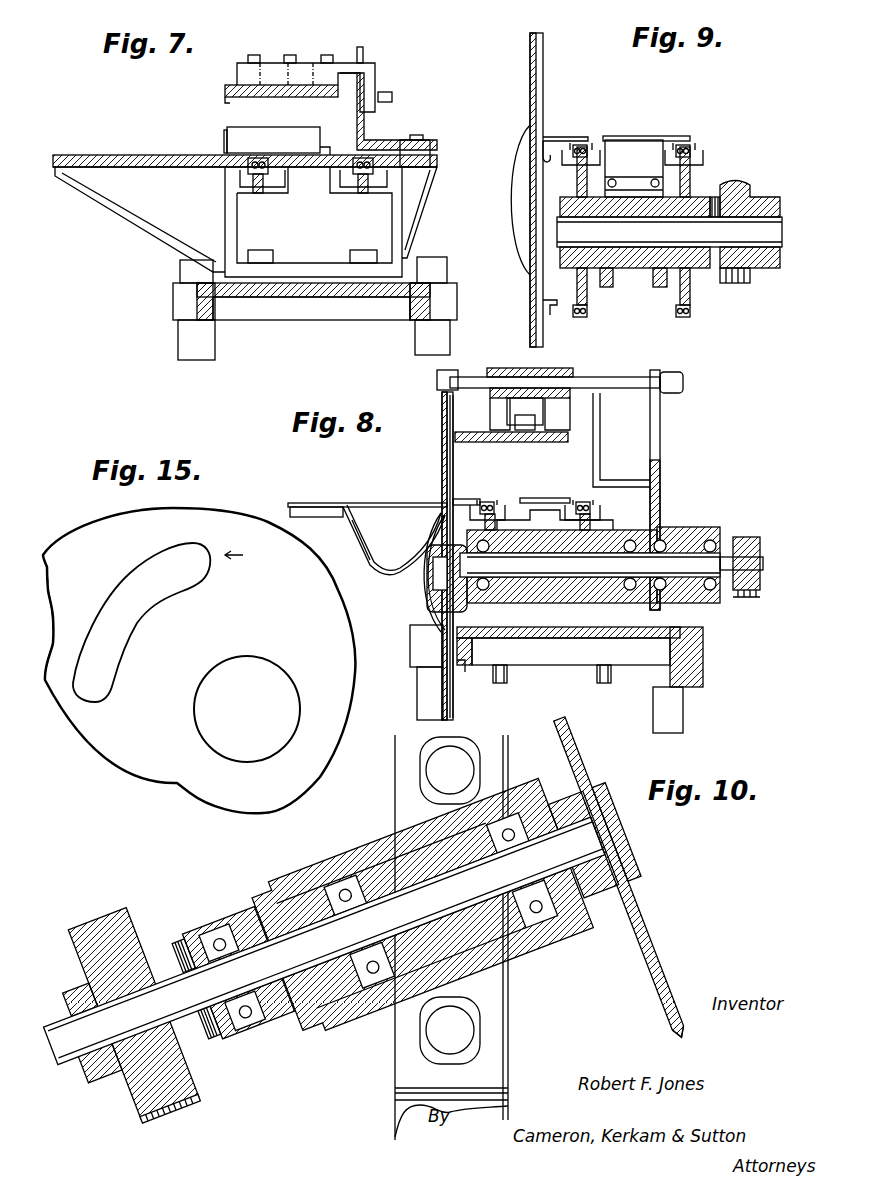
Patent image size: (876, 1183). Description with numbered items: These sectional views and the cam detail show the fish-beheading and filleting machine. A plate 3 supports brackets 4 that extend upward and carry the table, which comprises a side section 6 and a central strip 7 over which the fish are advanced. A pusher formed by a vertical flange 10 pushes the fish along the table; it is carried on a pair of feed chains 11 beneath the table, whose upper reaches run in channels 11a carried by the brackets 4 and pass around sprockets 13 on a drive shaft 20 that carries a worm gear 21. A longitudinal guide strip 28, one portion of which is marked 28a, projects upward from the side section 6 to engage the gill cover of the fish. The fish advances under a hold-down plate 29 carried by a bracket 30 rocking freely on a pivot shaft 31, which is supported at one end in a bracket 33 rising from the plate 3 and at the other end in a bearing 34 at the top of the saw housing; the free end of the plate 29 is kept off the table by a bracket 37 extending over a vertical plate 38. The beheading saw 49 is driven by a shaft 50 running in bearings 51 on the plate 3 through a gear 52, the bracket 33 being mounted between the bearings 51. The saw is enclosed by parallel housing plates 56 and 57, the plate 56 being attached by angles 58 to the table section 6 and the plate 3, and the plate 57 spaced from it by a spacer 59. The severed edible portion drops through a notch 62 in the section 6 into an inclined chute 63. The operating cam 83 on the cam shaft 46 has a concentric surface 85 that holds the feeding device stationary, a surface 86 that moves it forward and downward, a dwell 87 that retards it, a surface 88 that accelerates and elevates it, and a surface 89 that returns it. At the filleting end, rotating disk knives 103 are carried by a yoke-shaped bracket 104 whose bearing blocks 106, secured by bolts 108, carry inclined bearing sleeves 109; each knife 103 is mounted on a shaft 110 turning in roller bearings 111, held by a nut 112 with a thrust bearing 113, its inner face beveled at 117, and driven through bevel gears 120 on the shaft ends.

In FIG. 7, the plate 3 is at (243, 303).
In FIG. 8, the plate 3 is at (613, 640).
In FIG. 7, the brackets 4 is at (232, 203).
In FIG. 7, the side section 6 is at (127, 156).
In FIG. 9, the side section 6 is at (557, 137).
In FIG. 8, the side section 6 is at (311, 502).
In FIG. 9, the central section or strip 7 is at (653, 137).
In FIG. 8, the central section or strip 7 is at (543, 497).
In FIG. 7, the vertical flange 10 is at (240, 133).
In FIG. 7, the feed chains 11 is at (263, 185).
In FIG. 9, the feed chains 11 is at (575, 143).
In FIG. 8, the feed chains 11 is at (490, 500).
In FIG. 9, the channels 11a is at (593, 150).
In FIG. 8, the channels 11a is at (610, 505).
In FIG. 9, the sprockets 13 is at (693, 177).
In FIG. 9, the drive shaft 20 is at (657, 233).
In FIG. 9, the worm gear 21 is at (737, 278).
In FIG. 7, the longitudinal guide strip 28 is at (225, 143).
In FIG. 7, the clamp lip 28a is at (227, 98).
In FIG. 7, the hold-down plate 29 is at (258, 95).
In FIG. 8, the hold-down plate 29 is at (510, 442).
In FIG. 8, the bracket 30 is at (493, 367).
In FIG. 8, the pivot pin or shaft 31 is at (597, 378).
In FIG. 8, the bracket 33 is at (655, 472).
In FIG. 8, the bearing 34 is at (447, 372).
In FIG. 7, the bracket 37 is at (267, 77).
In FIG. 7, the vertical plate 38 is at (366, 118).
In FIG. 8, the vertical plate 38 is at (593, 490).
In FIG. 15, the cam shaft 46 is at (275, 686).
In FIG. 8, the beheading saw 49 is at (441, 463).
In FIG. 8, the shaft 50 is at (672, 560).
In FIG. 8, the bearings 51 is at (612, 528).
In FIG. 8, the gear 52 is at (743, 550).
In FIG. 9, the plate 56 is at (546, 82).
In FIG. 8, the plate 56 is at (455, 470).
In FIG. 8, the plate 57 is at (441, 440).
In FIG. 9, the angles 58 is at (543, 160).
In FIG. 8, the angles 58 is at (438, 508).
In FIG. 8, the spacer 59 is at (445, 403).
In FIG. 8, the notch or recess 62 is at (357, 502).
In FIG. 8, the inclined chute 63 is at (365, 535).
In FIG. 15, the cam 83 is at (133, 723).
In FIG. 15, the cam surface 85 is at (318, 790).
In FIG. 15, the cam surface 86 is at (78, 733).
In FIG. 15, the recess or dwell 87 is at (54, 632).
In FIG. 15, the cam surface 88 is at (47, 580).
In FIG. 15, the cam surface 89 is at (205, 509).
In FIG. 10, the rotating disk blades 103 is at (668, 972).
In FIG. 10, the yoke-shaped bracket 104 is at (397, 1100).
In FIG. 10, the bearing blocks 106 is at (495, 987).
In FIG. 10, the bolts 108 is at (423, 763).
In FIG. 10, the bearing sleeves 109 is at (387, 853).
In FIG. 10, the shaft 110 is at (383, 997).
In FIG. 10, the roller bearings 111 is at (323, 867).
In FIG. 10, the nut 112 is at (273, 995).
In FIG. 10, the thrust bearing 113 is at (258, 1040).
In FIG. 10, the bevel 117 is at (673, 1033).
In FIG. 10, the bevel gears 120 is at (103, 967).